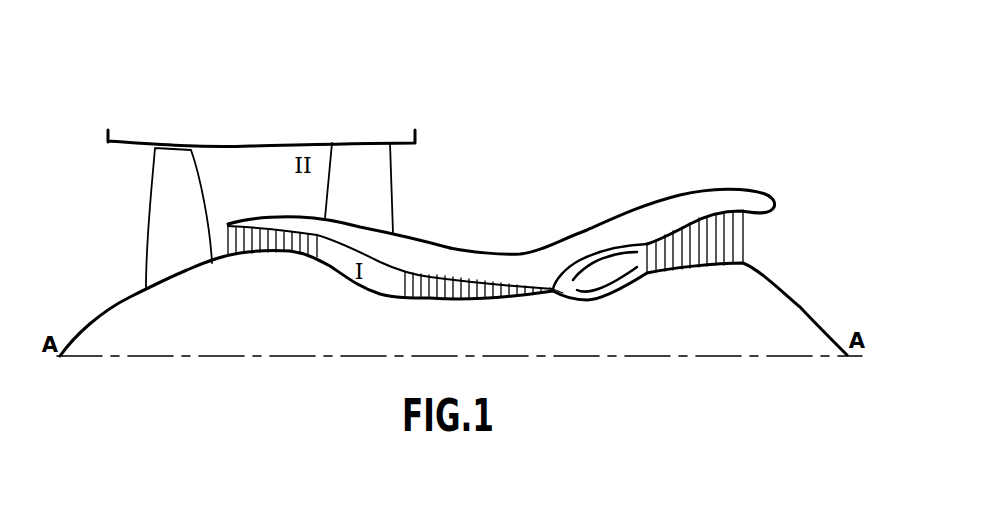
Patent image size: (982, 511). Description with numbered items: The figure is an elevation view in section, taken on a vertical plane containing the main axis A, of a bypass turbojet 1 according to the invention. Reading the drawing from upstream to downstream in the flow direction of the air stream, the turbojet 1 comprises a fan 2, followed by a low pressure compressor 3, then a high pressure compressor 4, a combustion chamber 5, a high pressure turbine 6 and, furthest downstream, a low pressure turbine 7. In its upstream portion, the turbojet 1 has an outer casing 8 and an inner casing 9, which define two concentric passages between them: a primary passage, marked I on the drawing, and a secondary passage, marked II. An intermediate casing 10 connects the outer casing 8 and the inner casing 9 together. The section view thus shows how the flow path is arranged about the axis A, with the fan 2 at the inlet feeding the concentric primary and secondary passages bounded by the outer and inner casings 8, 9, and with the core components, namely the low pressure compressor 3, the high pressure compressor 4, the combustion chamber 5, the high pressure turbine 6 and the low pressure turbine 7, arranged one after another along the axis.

The bypass turbojet 1 is at (546, 110).
The fan 2 is at (171, 207).
The low pressure compressor 3 is at (258, 216).
The high pressure compressor 4 is at (455, 274).
The combustion chamber 5 is at (597, 270).
The high pressure turbine 6 is at (657, 226).
The low pressure turbine 7 is at (712, 184).
The outer casing 8 is at (255, 142).
The inner casing 9 is at (286, 220).
The intermediate casing 10 is at (376, 166).